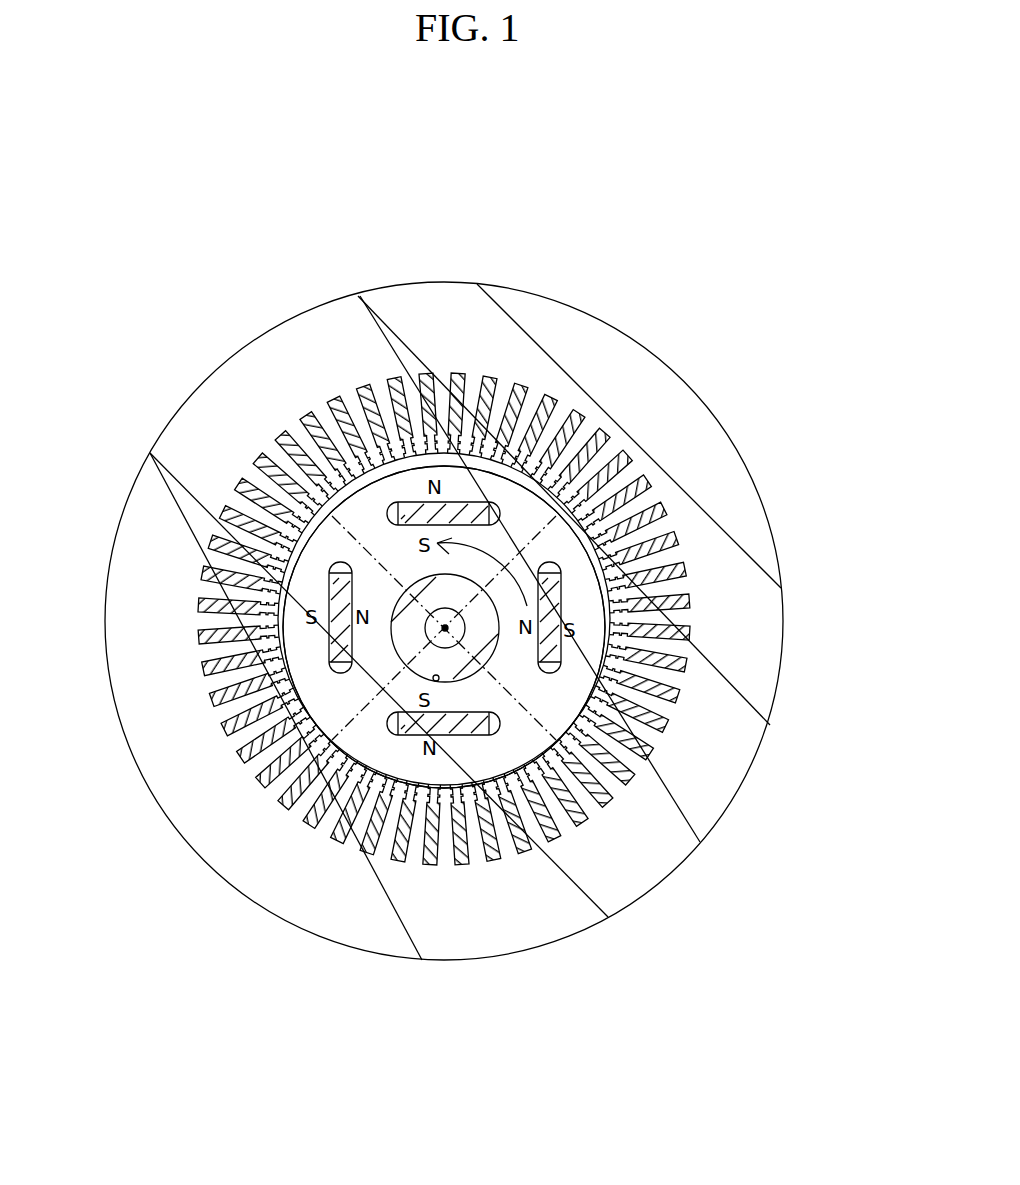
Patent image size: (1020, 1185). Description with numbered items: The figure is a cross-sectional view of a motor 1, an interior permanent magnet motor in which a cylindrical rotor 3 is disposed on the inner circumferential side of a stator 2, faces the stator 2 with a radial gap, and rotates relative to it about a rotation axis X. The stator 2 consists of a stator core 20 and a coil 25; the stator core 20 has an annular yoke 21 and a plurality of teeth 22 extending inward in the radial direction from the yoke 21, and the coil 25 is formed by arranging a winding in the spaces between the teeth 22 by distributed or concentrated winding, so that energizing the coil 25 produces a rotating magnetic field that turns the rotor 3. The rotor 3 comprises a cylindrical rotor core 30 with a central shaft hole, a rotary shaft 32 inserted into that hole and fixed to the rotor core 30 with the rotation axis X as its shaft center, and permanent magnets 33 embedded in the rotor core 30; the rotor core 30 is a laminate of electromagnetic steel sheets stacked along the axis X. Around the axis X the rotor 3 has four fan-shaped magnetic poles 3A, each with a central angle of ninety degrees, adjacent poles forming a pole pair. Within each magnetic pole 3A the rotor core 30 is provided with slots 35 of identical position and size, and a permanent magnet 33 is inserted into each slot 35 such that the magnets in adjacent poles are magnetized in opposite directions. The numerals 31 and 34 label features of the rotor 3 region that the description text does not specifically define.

The motor 1 is at (778, 208).
The stator 2 is at (257, 383).
The rotor 3 is at (480, 660).
The magnetic pole 3A is at (375, 495).
The stator core 20 is at (166, 428).
The yoke 21 is at (172, 452).
The teeth 22 is at (262, 473).
The coil 25 is at (197, 598).
The rotor core 30 is at (493, 660).
The rotor core 31 is at (285, 655).
The rotary shaft 32 is at (633, 777).
The permanent magnet 33 is at (453, 508).
The key groove 34 is at (437, 681).
The slot 35 is at (393, 508).
The rotation axis X is at (447, 626).